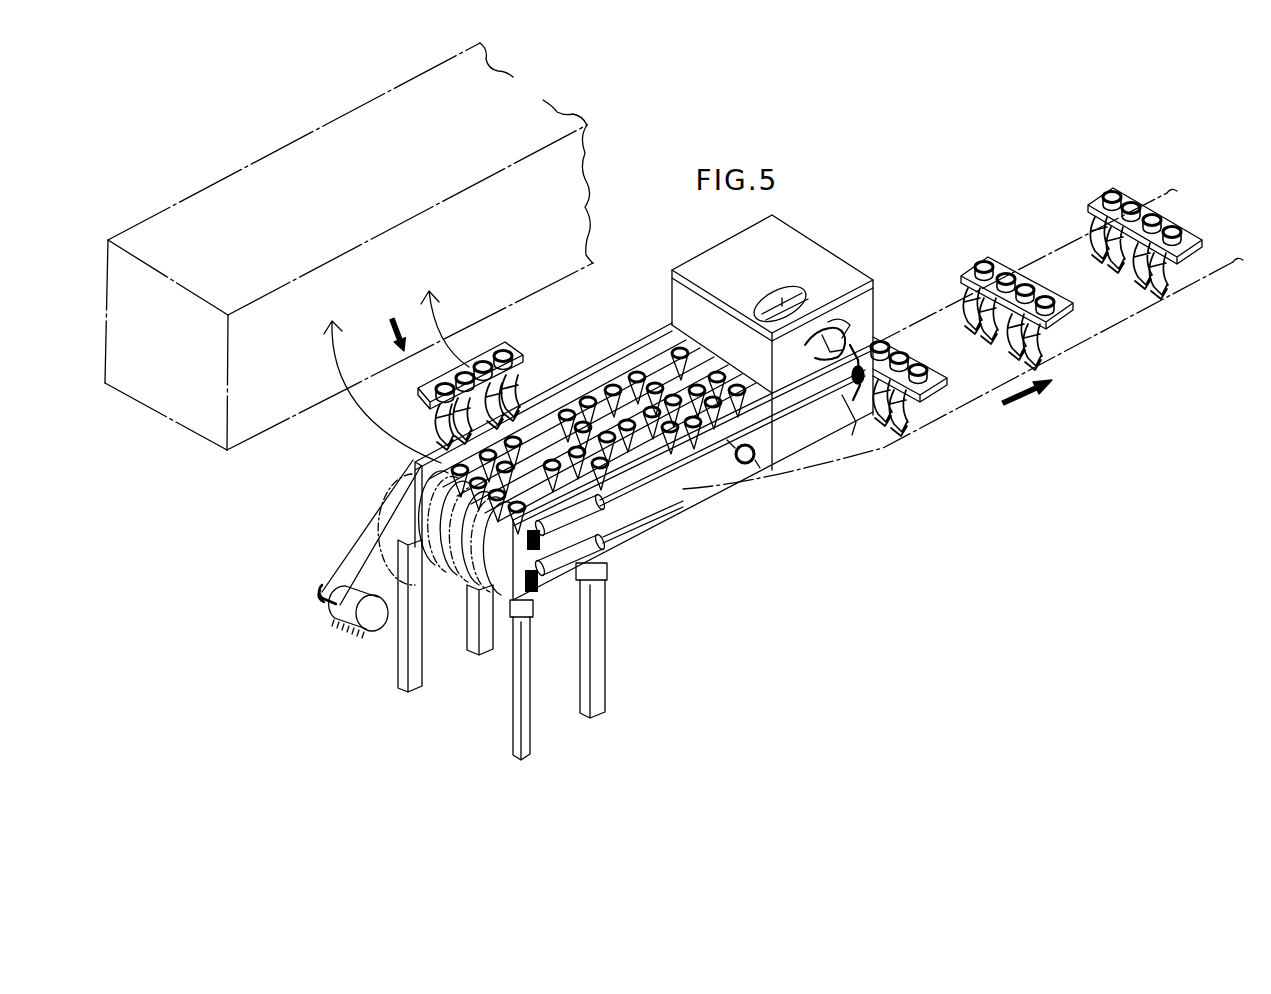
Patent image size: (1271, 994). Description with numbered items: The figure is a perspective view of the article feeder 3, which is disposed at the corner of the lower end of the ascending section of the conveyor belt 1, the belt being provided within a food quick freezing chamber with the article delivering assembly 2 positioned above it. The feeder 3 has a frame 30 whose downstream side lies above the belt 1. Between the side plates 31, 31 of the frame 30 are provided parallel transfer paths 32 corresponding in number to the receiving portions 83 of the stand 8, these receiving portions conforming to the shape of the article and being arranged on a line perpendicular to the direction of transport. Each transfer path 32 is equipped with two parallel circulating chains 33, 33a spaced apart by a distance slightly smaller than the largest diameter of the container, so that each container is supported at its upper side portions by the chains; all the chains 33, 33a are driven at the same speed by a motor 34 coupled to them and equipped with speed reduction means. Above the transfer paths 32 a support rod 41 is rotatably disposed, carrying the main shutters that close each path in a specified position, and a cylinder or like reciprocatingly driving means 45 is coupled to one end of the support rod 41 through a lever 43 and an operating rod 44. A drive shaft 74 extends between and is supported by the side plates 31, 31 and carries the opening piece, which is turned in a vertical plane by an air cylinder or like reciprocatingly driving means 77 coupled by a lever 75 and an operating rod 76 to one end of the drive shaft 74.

The conveyor belt 1 is at (1086, 350).
The article delivering assembly 2 is at (318, 411).
The article feeder 3 is at (663, 292).
The stand 8 is at (1068, 290).
The frame 30 is at (584, 541).
The side plates 31 is at (611, 356).
The transfer paths 32 is at (532, 433).
The circulating chain 33 is at (418, 500).
The circulating chain 33a is at (412, 478).
The motor 34 is at (326, 623).
The support rod 41 is at (832, 338).
The lever 43 is at (815, 380).
The operating rod 44 is at (813, 386).
The reciprocatingly driving means 45 is at (603, 528).
The drive shaft 74 is at (848, 358).
The lever 75 is at (866, 410).
The operating rod 76 is at (742, 465).
The reciprocatingly driving means 77 is at (561, 583).
The receiving portions 83 is at (915, 357).